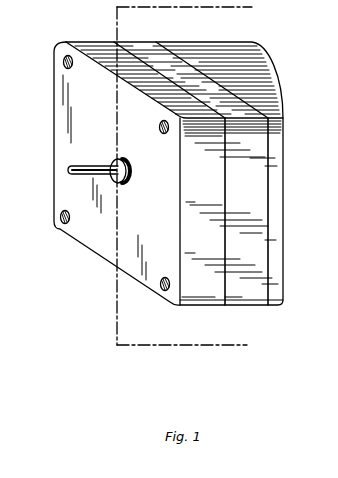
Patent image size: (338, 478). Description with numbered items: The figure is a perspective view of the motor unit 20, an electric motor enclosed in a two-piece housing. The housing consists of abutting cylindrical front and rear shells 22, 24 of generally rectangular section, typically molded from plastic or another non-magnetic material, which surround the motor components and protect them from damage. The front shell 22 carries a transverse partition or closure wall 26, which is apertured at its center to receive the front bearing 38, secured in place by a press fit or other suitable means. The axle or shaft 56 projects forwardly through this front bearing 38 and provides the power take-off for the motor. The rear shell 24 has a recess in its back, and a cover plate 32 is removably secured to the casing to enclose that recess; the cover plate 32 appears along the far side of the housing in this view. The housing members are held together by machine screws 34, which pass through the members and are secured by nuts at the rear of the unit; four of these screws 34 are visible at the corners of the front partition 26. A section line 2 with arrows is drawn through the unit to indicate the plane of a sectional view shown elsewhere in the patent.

The section line 2 is at (234, 11).
The motor unit 20 is at (93, 255).
The front housing shell 22 is at (212, 304).
The rear housing shell 24 is at (253, 308).
The front transverse partition 26 is at (152, 226).
The cover plate 32 is at (280, 190).
The machine screws 34 is at (63, 67).
The front bearing 38 is at (130, 167).
The shaft 56 is at (73, 165).